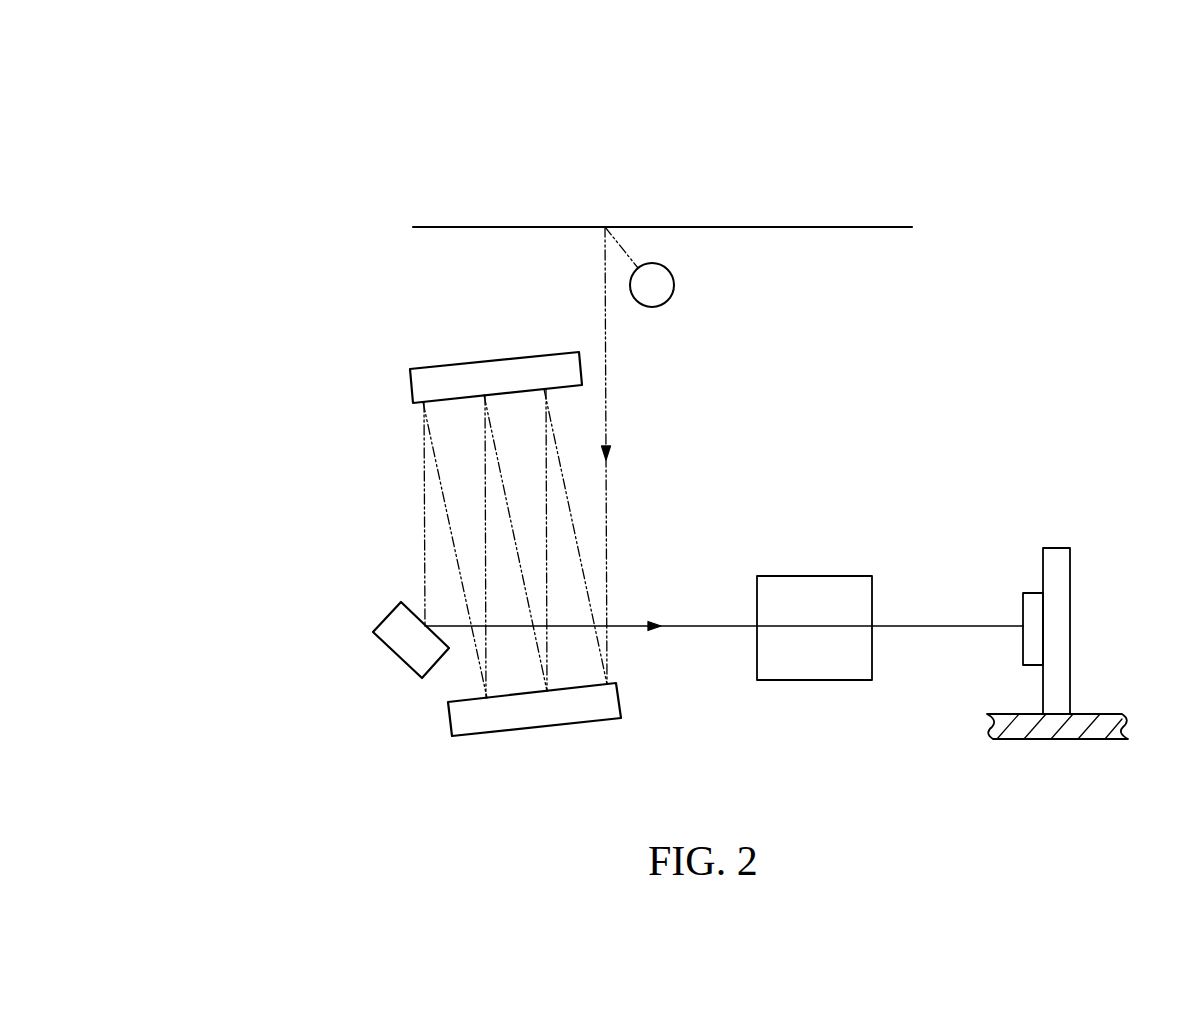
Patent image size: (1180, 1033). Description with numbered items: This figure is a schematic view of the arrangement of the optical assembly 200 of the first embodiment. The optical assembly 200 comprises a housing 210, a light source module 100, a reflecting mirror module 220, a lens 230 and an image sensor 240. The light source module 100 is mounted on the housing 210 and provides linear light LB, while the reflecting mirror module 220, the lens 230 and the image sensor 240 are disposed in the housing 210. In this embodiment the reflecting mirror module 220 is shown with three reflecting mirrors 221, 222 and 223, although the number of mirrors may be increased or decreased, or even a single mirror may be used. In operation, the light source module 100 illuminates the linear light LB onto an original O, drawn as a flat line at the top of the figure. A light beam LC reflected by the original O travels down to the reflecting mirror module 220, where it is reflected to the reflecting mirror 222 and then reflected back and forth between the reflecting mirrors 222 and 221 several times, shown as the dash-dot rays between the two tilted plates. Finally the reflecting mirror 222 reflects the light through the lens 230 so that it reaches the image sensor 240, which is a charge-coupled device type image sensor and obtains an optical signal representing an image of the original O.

The optical assembly 200 is at (714, 61).
The light source module 100 is at (674, 290).
The reflecting mirror module 220 is at (278, 172).
The reflecting mirror 221 is at (487, 375).
The reflecting mirror 222 is at (572, 706).
The reflecting mirror 223 is at (390, 637).
The lens 230 is at (817, 585).
The image sensor 240 is at (1031, 600).
The housing 210 is at (988, 725).
The linear light LB is at (630, 257).
The light beam LC is at (607, 406).
The original O is at (870, 227).